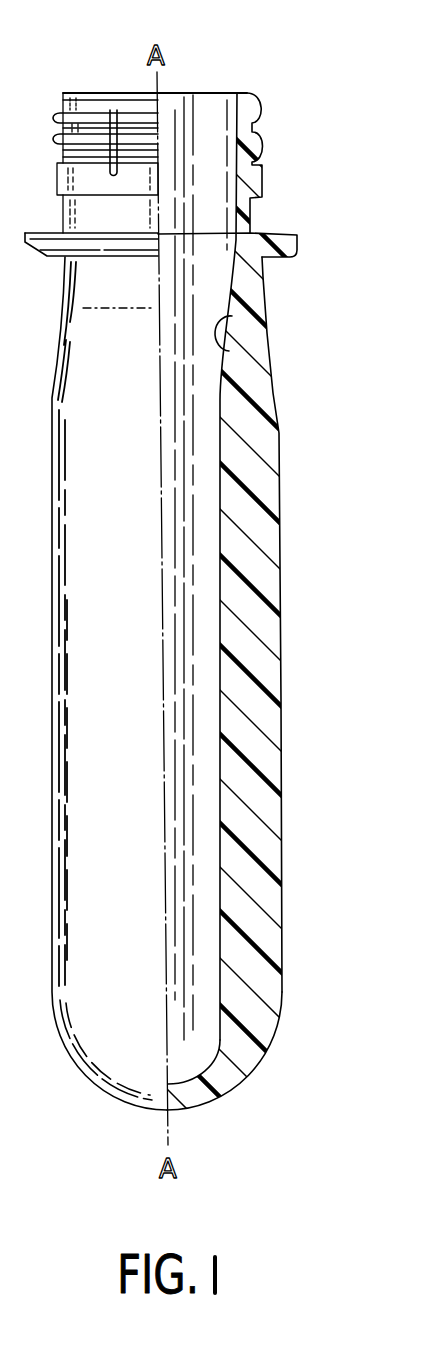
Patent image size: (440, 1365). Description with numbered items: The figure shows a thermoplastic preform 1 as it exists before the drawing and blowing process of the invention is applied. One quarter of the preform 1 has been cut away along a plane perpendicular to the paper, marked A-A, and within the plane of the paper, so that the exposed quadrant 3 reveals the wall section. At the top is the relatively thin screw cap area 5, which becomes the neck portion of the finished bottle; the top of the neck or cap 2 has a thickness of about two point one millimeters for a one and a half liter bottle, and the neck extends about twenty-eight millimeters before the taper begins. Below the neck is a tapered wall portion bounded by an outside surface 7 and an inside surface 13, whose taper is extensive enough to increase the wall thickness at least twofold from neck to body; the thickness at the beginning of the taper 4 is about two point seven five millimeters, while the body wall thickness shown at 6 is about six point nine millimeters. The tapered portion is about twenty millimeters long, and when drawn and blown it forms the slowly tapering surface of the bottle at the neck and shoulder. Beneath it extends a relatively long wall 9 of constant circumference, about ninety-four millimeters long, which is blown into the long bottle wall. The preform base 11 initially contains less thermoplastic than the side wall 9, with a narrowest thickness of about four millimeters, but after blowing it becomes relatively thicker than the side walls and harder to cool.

The preform 1 is at (107, 652).
The top of the neck or cap 2 is at (241, 93).
The quadrant 3 is at (207, 615).
The beginning of the taper 4 is at (260, 282).
The screw cap area 5 is at (260, 122).
The body wall thickness 6 is at (275, 412).
The outside surface of tapered wall portion 7 is at (273, 370).
The long wall 9 is at (272, 910).
The preform base 11 is at (205, 1102).
The inside surface of tapered wall portion 13 is at (240, 315).